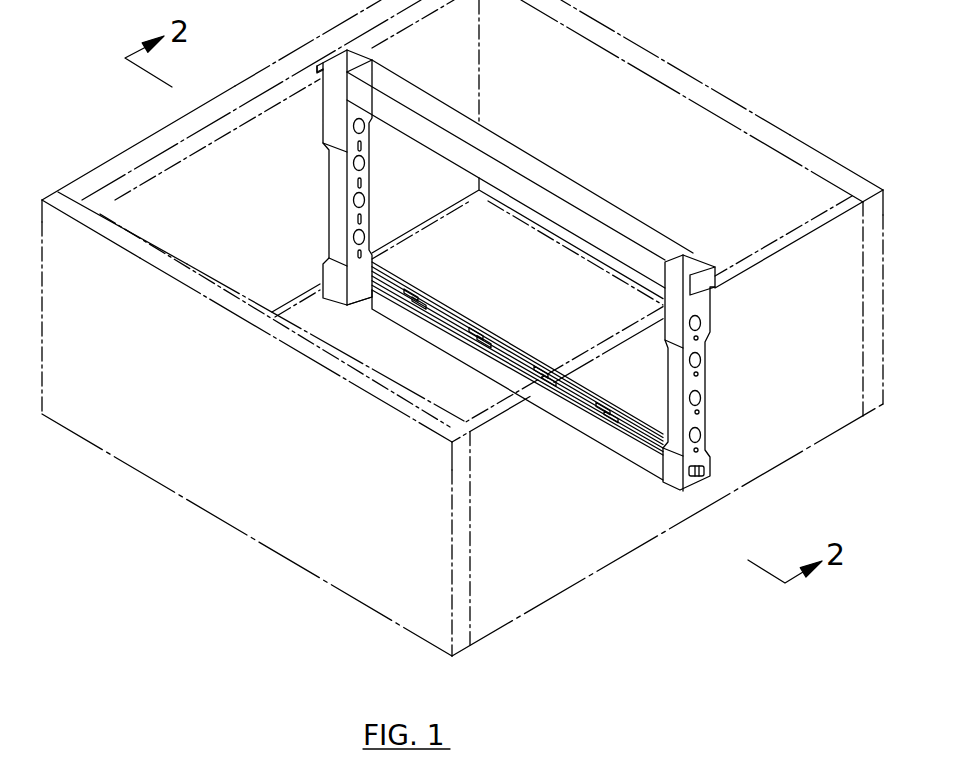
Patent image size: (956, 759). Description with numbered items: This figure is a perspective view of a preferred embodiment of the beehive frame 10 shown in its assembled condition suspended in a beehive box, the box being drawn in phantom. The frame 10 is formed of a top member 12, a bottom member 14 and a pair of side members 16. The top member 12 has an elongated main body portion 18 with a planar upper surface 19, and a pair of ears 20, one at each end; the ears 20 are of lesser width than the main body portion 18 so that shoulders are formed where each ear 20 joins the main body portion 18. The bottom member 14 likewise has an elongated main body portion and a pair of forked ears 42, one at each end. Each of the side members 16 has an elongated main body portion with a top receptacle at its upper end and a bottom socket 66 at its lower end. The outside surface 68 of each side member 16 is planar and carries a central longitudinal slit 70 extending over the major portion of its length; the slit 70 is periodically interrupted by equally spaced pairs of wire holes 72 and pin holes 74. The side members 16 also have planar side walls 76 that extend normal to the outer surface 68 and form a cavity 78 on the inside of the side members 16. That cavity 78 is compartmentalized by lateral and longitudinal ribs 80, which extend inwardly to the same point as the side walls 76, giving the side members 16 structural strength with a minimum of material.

The beehive frame 10 is at (562, 165).
The top member 12 is at (613, 203).
The bottom member 14 is at (427, 343).
The side members 16 is at (328, 173).
The main body portion 18 is at (638, 238).
The planar upper surface 19 is at (487, 150).
The ears 20 is at (326, 62).
The forked ears 42 is at (699, 489).
The bottom socket 66 is at (705, 470).
The outside surface 68 is at (702, 380).
The central longitudinal slit 70 is at (706, 348).
The wire holes 72 is at (714, 418).
The pin holes 74 is at (705, 403).
The planar side walls 76 is at (338, 198).
The cavity 78 is at (350, 222).
The lateral and longitudinal ribs 80 is at (350, 230).